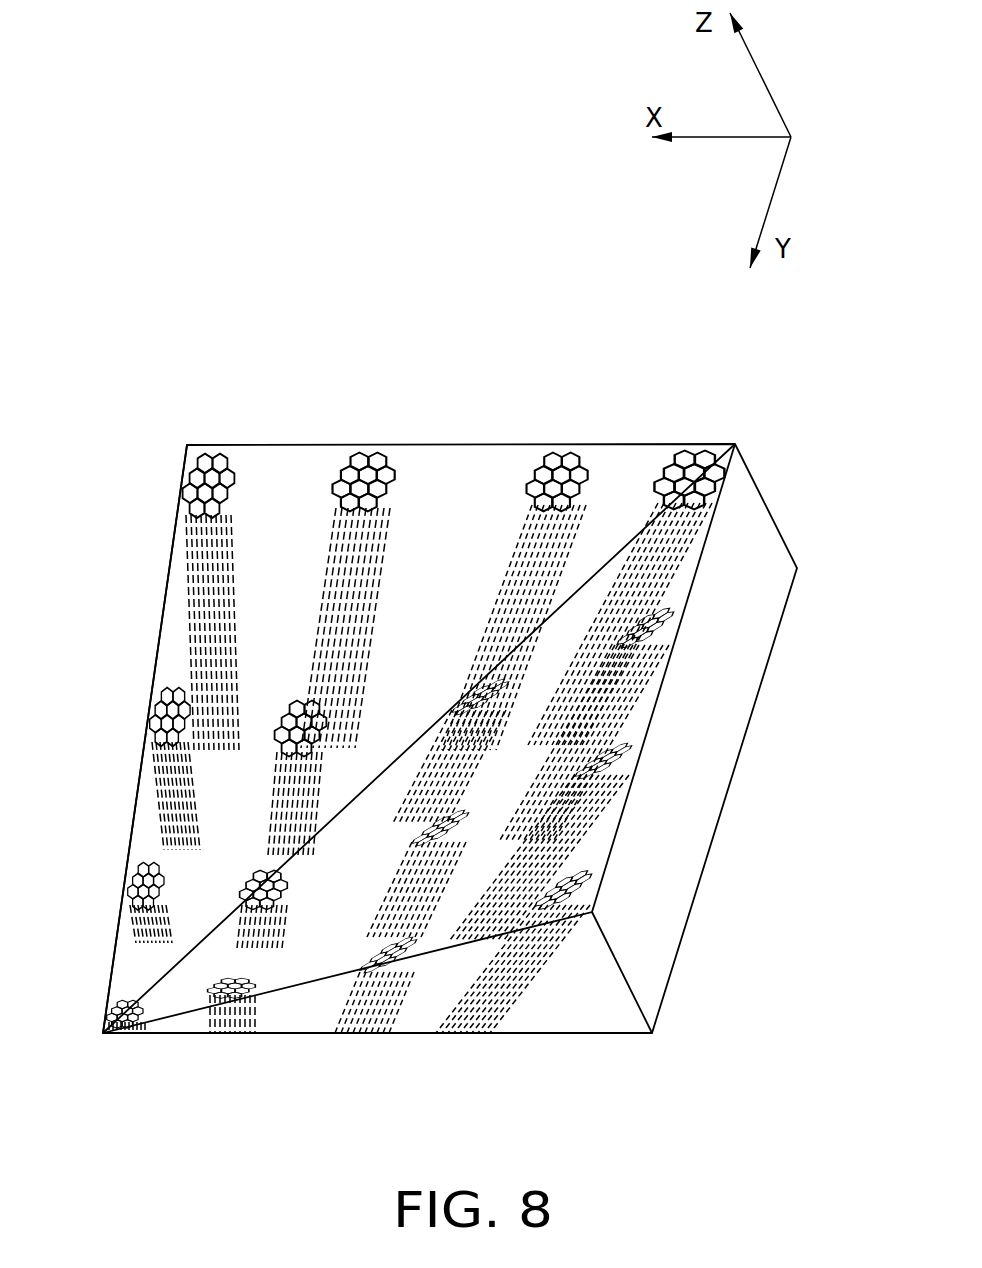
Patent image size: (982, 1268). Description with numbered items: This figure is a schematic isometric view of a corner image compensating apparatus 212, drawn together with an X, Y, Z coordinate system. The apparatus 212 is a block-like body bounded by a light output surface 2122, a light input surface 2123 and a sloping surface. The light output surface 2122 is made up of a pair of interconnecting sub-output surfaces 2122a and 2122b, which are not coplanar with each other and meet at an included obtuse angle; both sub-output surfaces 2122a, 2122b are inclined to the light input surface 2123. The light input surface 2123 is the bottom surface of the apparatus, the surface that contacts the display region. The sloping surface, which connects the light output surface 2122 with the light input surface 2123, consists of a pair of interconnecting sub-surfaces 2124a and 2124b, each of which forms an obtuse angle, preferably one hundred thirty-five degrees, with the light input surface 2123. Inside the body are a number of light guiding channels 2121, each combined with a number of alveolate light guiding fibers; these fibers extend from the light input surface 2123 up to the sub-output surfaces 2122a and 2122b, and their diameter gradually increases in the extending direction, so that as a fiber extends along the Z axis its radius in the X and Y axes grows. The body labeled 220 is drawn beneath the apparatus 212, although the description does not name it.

The corner image compensating apparatus 212 is at (363, 198).
The substrate 220 is at (578, 1003).
The light guiding channel 2121 is at (167, 702).
The light output surface 2122 is at (786, 390).
The sub-output surface 2122a is at (462, 468).
The sub-output surface 2122b is at (565, 622).
The light input surface 2123 is at (280, 1035).
The sub-surface 2124a is at (412, 1012).
The sub-surface 2124b is at (562, 940).